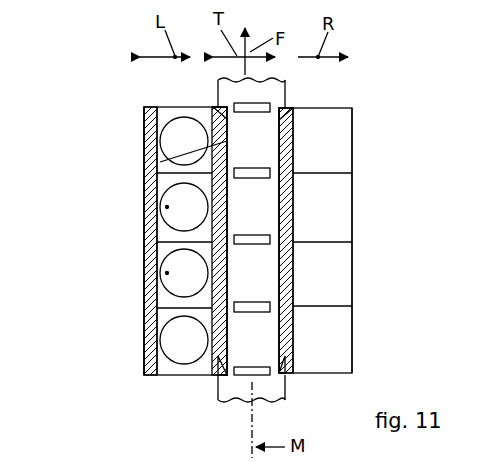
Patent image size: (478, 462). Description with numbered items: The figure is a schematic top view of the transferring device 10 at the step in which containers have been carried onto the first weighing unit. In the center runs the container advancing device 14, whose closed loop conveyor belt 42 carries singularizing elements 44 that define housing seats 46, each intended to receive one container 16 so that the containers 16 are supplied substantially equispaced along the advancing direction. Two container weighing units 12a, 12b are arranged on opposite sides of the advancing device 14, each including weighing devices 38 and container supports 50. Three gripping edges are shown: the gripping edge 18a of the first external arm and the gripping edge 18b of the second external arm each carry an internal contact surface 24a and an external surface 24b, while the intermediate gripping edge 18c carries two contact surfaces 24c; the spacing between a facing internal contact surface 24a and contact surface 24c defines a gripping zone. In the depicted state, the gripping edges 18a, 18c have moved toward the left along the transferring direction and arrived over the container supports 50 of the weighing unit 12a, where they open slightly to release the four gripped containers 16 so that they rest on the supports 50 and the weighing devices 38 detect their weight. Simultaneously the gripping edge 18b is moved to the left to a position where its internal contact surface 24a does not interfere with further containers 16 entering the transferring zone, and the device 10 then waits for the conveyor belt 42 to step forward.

The transferring device 10 is at (366, 87).
The container weighing unit 12a is at (116, 249).
The container weighing unit 12b is at (384, 249).
The container advancing device 14 is at (227, 408).
The containers 16 is at (147, 205).
The gripping edge 18a is at (145, 114).
The gripping edge 18b is at (292, 110).
The gripping edge 18c is at (216, 106).
The internal contact surface 24a is at (227, 141).
The external surface 24b is at (146, 158).
The contact surface 24c is at (146, 344).
The weighing device 38 is at (146, 303).
The conveyor belt 42 is at (266, 390).
The singularizing elements 44 is at (253, 174).
The housing seats 46 is at (267, 276).
The container supports 50 is at (338, 193).